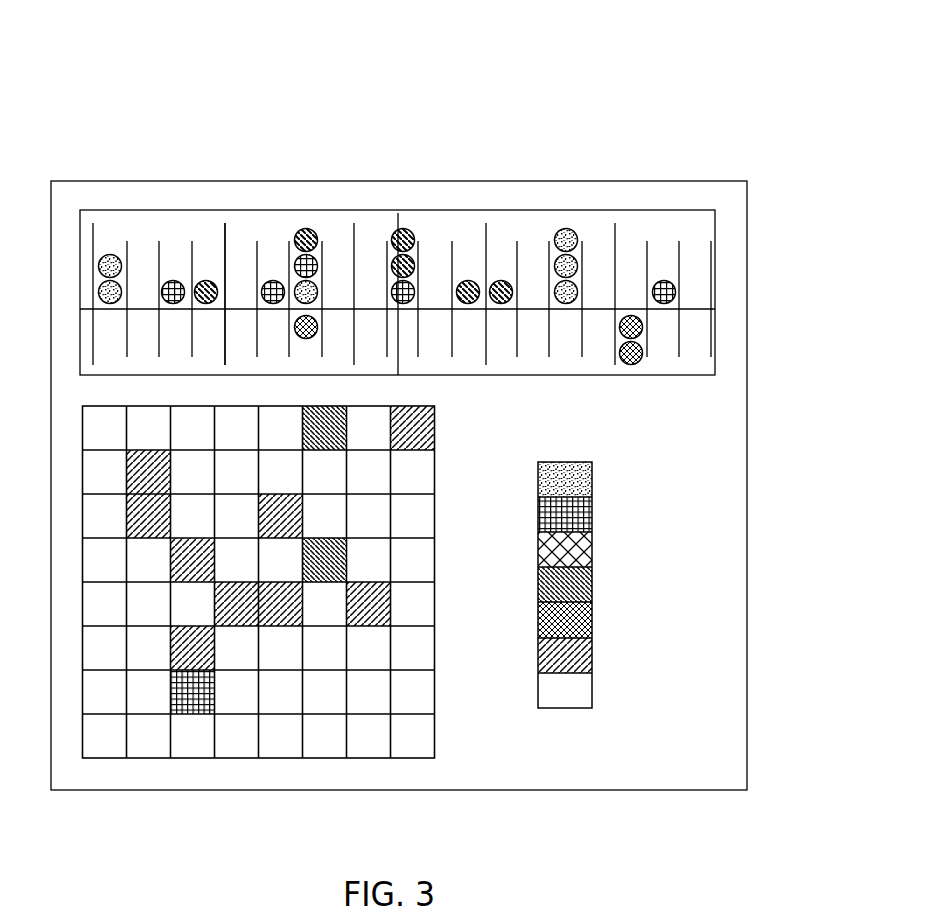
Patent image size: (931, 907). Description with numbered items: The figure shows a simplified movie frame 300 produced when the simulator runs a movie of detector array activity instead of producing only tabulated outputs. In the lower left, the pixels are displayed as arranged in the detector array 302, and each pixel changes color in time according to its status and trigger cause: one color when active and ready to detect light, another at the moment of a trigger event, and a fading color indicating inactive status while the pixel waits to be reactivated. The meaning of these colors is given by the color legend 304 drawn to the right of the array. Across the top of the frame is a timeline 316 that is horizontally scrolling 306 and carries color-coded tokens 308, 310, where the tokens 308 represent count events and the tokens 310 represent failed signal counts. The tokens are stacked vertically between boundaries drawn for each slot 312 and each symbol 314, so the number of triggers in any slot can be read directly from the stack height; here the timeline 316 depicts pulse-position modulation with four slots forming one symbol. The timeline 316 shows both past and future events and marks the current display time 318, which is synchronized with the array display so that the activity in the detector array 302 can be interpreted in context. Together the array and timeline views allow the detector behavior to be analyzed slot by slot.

The movie frame 300 is at (428, 42).
The detector array 302 is at (246, 778).
The color legend 304 is at (612, 578).
The horizontally scrolling direction 306 is at (590, 138).
The count events 308 is at (677, 293).
The failed signal counts 310 is at (646, 331).
The slot 312 is at (289, 241).
The symbol 314 is at (225, 241).
The timeline 316 is at (110, 210).
The current display time 318 is at (398, 214).